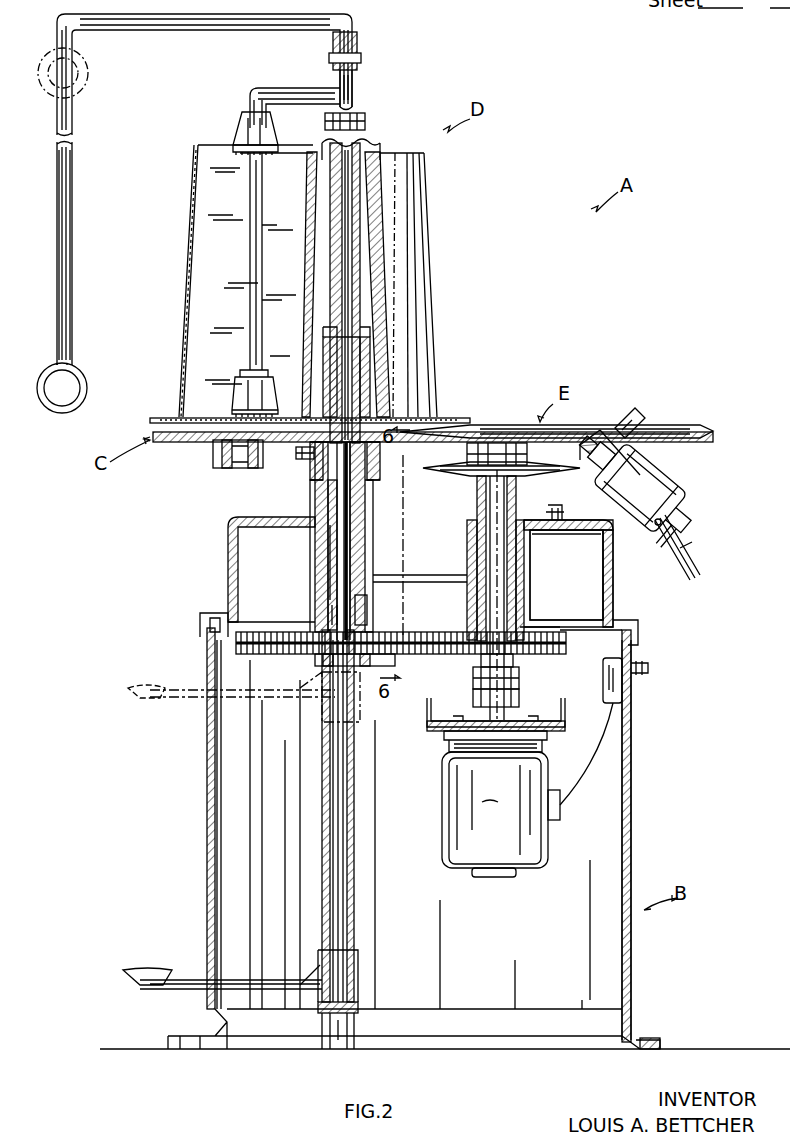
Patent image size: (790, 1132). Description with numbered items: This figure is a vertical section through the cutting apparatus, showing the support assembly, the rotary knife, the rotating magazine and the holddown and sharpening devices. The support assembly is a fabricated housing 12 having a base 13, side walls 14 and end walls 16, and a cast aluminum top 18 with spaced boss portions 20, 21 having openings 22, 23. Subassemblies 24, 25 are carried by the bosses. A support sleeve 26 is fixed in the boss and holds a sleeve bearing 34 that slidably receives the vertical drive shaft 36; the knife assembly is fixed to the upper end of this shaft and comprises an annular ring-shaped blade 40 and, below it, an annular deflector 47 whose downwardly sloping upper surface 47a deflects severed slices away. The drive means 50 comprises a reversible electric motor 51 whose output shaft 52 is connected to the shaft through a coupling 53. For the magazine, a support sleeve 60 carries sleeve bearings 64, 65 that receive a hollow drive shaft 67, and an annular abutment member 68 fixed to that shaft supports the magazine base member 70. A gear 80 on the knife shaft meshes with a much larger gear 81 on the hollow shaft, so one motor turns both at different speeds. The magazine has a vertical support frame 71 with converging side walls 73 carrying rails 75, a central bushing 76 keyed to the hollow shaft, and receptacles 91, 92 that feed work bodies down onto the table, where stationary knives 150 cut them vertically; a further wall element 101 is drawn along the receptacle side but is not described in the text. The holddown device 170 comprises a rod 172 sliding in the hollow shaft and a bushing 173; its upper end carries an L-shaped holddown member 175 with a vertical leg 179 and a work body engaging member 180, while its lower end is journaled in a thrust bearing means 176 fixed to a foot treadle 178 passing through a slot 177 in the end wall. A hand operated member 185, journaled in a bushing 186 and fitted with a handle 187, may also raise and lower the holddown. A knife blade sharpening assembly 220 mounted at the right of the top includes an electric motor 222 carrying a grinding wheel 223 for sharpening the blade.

The holddown device 170 is at (377, 52).
The bushing 186 is at (360, 60).
The rod 172 is at (352, 104).
The holddown member 175 is at (295, 92).
The work body engaging member 180 is at (241, 135).
The vertically extending leg 179 is at (263, 259).
The vertical support frame 71 is at (365, 122).
The side walls 73 is at (374, 148).
The work receiving receptacle 92 is at (184, 288).
The work receiving receptacle 91 is at (431, 225).
The tube 101 is at (420, 252).
The rails 75 is at (380, 186).
The bushing 173 is at (334, 200).
The bushing 76 is at (365, 356).
The base member 70 is at (174, 410).
The annular ring-shaped blade 40 is at (566, 428).
The stationary knives 150 is at (224, 446).
The annular abutment member 68 is at (318, 446).
The annular sleeve bearing 64 is at (362, 462).
The subassembly 25 is at (320, 497).
The hollow drive shaft 67 is at (355, 500).
The support sleeve 60 is at (328, 558).
The boss portion 21 is at (324, 577).
The opening 23 is at (328, 590).
The annular sleeve bearing 65 is at (367, 614).
The top 18 is at (228, 584).
The downwardly sloping upper surface 47a is at (544, 474).
The annular deflector 47 is at (530, 478).
The subassembly 24 is at (470, 507).
The support sleeve 26 is at (470, 596).
The annular sleeve bearing 34 is at (524, 616).
The boss portion 20 is at (532, 576).
The opening 22 is at (530, 560).
The knife blade sharpening assembly 220 is at (708, 492).
The electric motor 222 is at (672, 472).
The grinding wheel 223 is at (628, 420).
The gear 80 is at (560, 646).
The gear 81 is at (280, 660).
The drive shaft 36 is at (522, 672).
The coupling 53 is at (476, 700).
The output shaft 52 is at (520, 720).
The drive means 50 is at (434, 840).
The reversible electric motor 51 is at (493, 790).
The housing 12 is at (639, 776).
The end walls 16 is at (625, 834).
The slot 177 is at (208, 758).
The side walls 14 is at (480, 940).
The base 13 is at (660, 1042).
The axial thrust bearing means 176 is at (358, 972).
The foot treadle 178 is at (164, 978).
The hand operated member 185 is at (57, 262).
The handle 187 is at (80, 414).